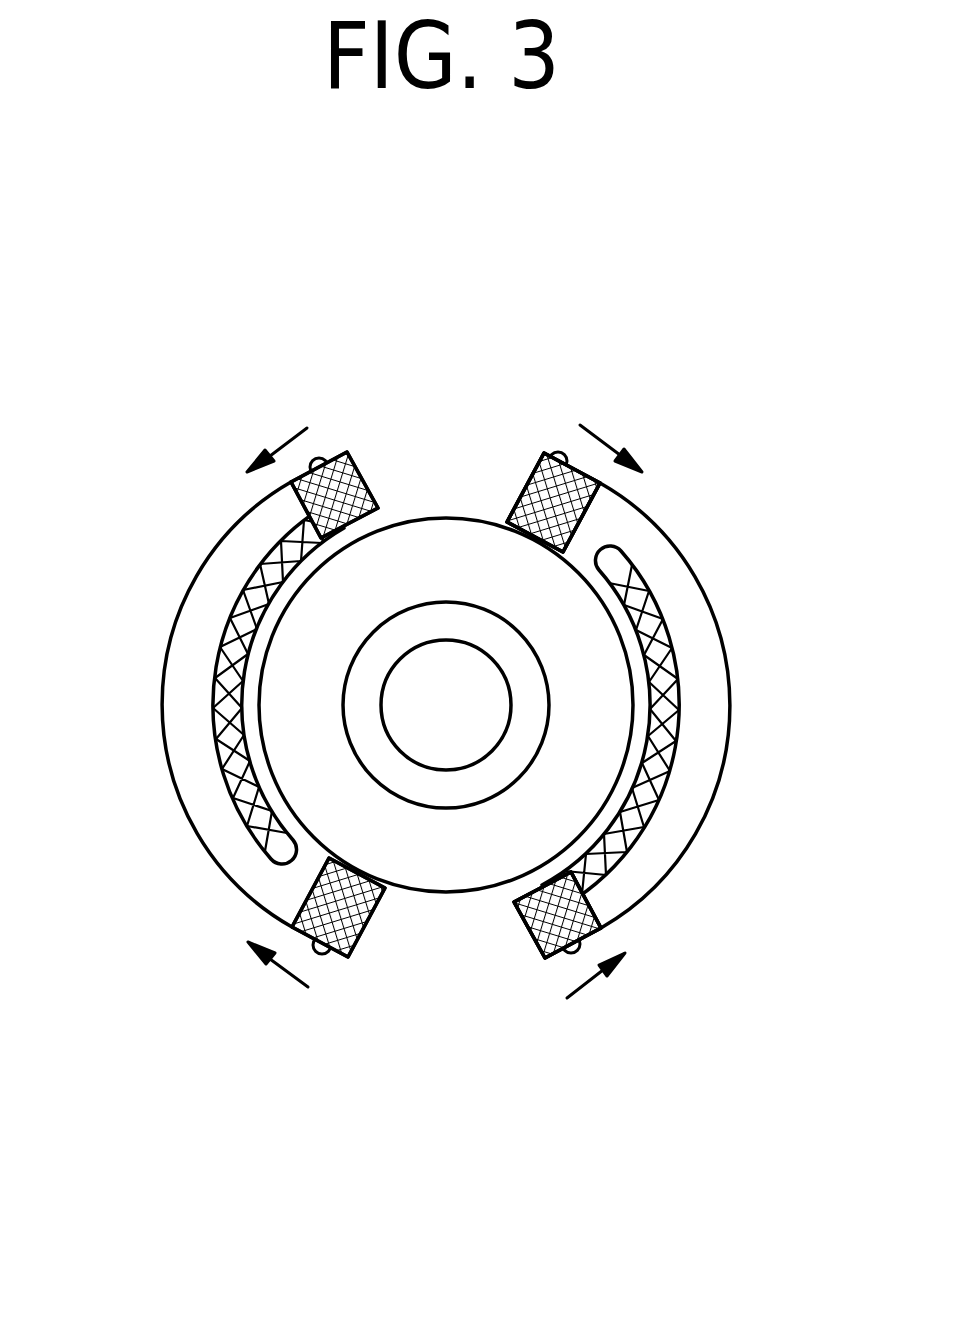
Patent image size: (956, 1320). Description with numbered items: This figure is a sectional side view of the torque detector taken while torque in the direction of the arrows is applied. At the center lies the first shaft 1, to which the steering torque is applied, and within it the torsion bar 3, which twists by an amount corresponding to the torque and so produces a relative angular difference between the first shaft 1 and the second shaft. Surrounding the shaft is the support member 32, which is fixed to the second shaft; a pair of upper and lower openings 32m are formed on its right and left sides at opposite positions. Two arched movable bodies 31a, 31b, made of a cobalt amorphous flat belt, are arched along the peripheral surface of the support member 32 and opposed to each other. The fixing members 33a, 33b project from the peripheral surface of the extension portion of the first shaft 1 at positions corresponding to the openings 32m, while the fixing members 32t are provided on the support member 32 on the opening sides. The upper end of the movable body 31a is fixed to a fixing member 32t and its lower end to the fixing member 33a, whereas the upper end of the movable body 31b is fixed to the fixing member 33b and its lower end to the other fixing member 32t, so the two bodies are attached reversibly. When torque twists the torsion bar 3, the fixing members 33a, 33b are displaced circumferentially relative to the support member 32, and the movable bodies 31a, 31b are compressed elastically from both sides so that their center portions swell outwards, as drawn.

The first shaft 1 is at (427, 552).
The torsion bar 3 is at (452, 712).
The movable body 31a is at (217, 863).
The movable body 31b is at (700, 822).
The support member 32 is at (253, 570).
The fixing member 32t is at (366, 481).
The opening 32m is at (483, 500).
The fixing member 33a is at (297, 898).
The fixing member 33b is at (580, 513).